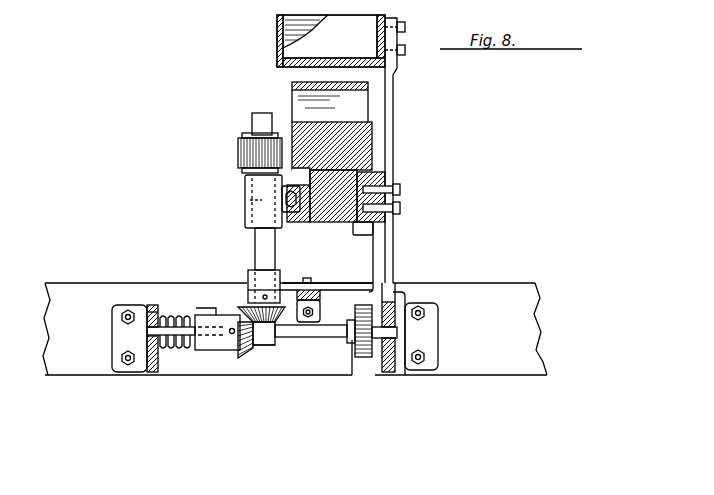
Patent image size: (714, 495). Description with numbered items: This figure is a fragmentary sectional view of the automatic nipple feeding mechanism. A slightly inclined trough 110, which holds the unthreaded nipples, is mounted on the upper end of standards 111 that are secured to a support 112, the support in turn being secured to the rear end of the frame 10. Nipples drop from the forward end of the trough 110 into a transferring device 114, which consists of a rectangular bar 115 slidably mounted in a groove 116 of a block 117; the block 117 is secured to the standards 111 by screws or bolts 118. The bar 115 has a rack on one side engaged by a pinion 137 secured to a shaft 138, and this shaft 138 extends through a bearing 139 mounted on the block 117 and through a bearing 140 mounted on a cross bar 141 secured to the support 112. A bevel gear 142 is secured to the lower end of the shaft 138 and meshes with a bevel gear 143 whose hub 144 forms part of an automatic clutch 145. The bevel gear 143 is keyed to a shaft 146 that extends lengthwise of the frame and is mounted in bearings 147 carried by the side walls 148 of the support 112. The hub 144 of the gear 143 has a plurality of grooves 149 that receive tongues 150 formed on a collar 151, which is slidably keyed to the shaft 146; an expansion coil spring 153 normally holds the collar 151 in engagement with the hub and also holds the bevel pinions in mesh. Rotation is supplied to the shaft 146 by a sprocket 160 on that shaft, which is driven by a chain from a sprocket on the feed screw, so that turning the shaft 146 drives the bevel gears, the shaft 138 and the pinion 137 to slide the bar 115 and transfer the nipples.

The frame 10 is at (86, 360).
The trough 110 is at (283, 42).
The standards 111 is at (386, 160).
The support 112 is at (142, 377).
The transferring device 114 is at (242, 182).
The rectangular bar 115 is at (335, 152).
The groove 116 is at (332, 212).
The block 117 is at (300, 224).
The screws or bolts 118 is at (400, 208).
The pinion 137 is at (250, 150).
The shaft 138 is at (255, 123).
The bearing 139 is at (258, 212).
The bearing 140 is at (266, 283).
The cross bar 141 is at (312, 290).
The bevel gear 142 is at (267, 345).
The bevel gear 143 is at (244, 346).
The hub 144 is at (242, 343).
The automatic clutch 145 is at (212, 310).
The shaft 146 is at (292, 338).
The bearings 147 is at (397, 340).
The side walls 148 is at (393, 372).
The grooves 149 is at (225, 340).
The tongues 150 is at (179, 322).
The collar 151 is at (190, 330).
The expansion coil spring 153 is at (166, 312).
The sprocket 160 is at (378, 303).